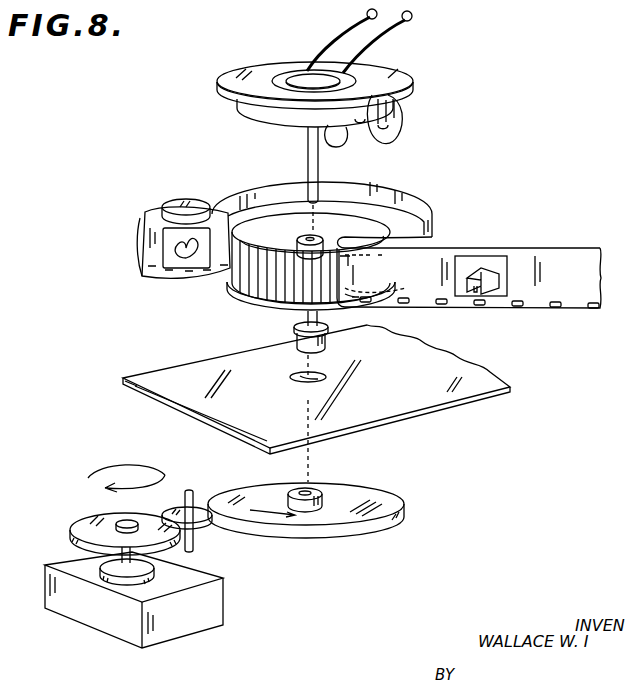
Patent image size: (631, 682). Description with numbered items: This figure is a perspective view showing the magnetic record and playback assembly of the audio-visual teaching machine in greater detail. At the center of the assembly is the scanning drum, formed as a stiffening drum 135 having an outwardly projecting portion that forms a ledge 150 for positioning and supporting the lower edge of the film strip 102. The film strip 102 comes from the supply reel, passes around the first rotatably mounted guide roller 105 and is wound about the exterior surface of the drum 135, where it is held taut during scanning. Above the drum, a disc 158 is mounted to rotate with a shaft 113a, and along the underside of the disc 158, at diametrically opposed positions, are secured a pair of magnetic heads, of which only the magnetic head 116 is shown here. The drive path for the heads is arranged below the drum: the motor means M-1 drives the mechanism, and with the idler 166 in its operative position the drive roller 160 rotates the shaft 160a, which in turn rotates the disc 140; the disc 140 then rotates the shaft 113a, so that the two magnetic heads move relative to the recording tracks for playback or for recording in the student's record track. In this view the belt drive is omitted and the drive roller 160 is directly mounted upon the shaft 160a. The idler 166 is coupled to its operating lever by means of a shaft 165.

The disc 158 is at (220, 80).
The magnetic head 116 is at (396, 108).
The shaft 113a is at (308, 162).
The first rotatably mounted guide roller 105 is at (212, 190).
The film strip 102 is at (548, 250).
The stiffening drum 135 is at (236, 273).
The ledge 150 is at (241, 293).
The disc 140 is at (404, 503).
The shaft 165 is at (190, 490).
The idler 166 is at (211, 527).
The drive roller 160 is at (86, 520).
The shaft 160a is at (135, 554).
The motor means M-1 is at (116, 637).